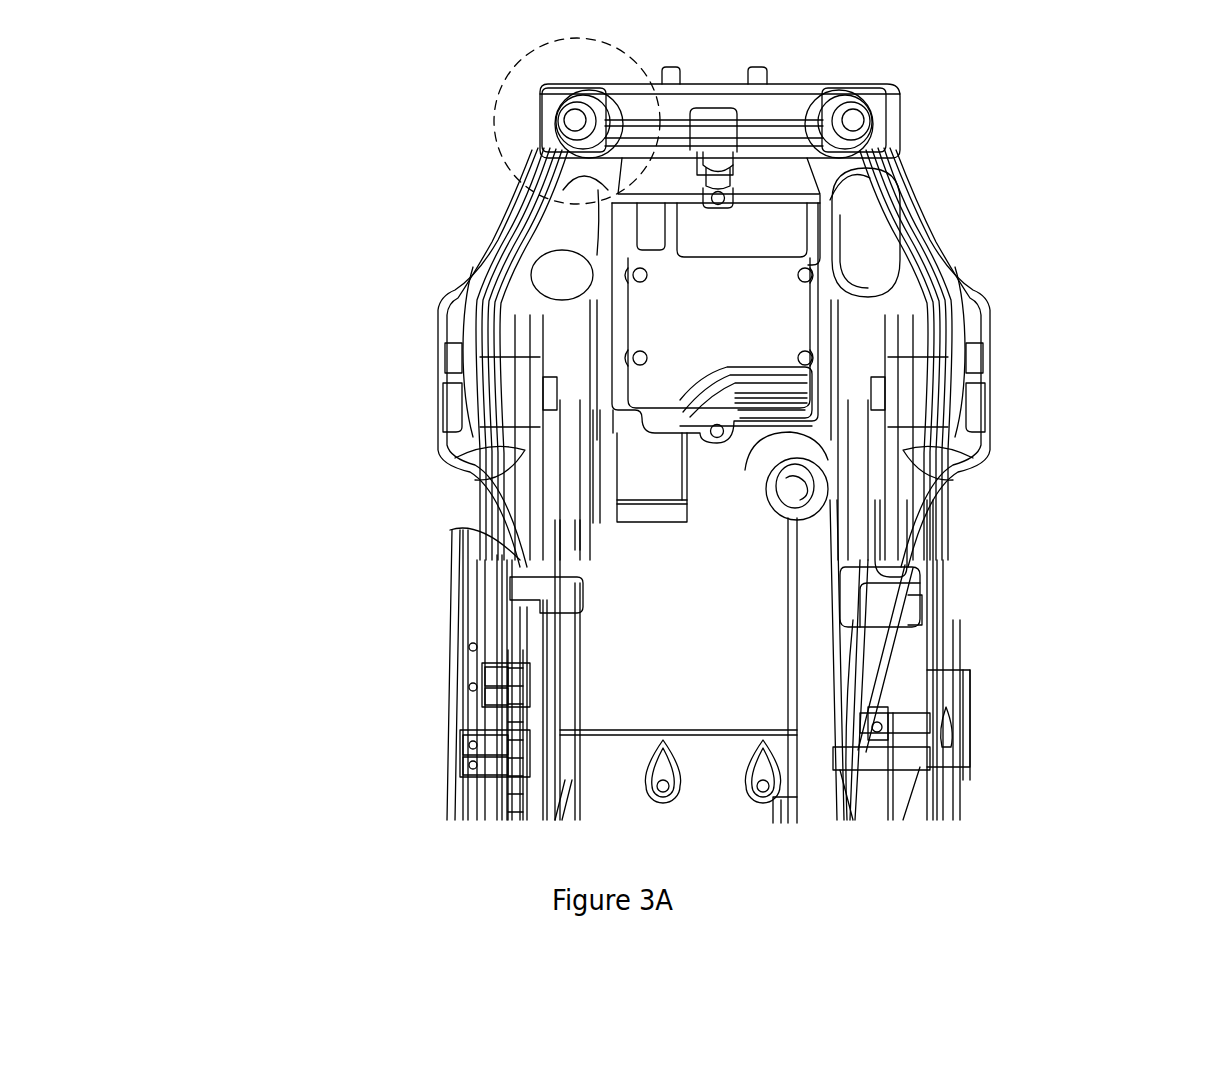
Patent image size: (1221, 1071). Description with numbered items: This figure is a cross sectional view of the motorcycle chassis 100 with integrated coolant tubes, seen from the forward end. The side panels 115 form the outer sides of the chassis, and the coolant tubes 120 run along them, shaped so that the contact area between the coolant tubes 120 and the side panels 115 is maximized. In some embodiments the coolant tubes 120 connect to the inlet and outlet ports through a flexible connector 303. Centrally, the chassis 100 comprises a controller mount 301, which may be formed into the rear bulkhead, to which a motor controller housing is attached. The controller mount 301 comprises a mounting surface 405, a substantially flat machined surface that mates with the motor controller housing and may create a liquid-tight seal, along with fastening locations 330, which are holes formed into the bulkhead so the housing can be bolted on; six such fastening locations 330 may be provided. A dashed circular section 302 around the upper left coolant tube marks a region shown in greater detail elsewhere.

The motorcycle chassis 100 is at (390, 725).
The side panel 115 is at (437, 317).
The coolant tube 120 is at (553, 113).
The controller mount 301 is at (815, 317).
The circular section 302 is at (516, 64).
The flexible connector 303 is at (555, 232).
The fastening locations 330 is at (730, 437).
The mounting surface 405 is at (815, 207).